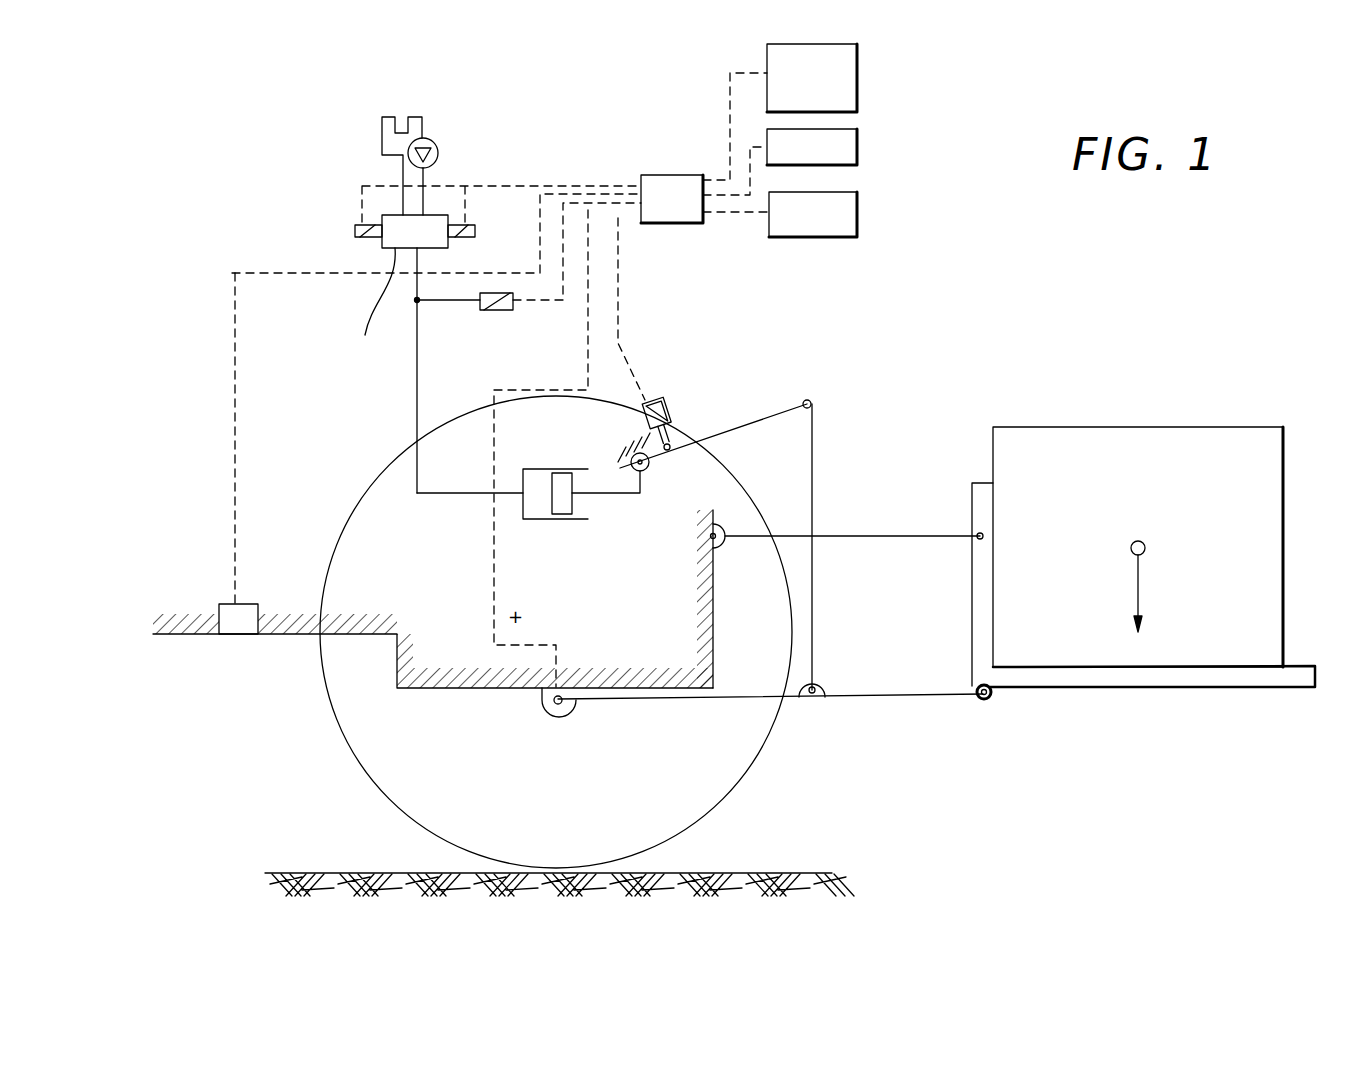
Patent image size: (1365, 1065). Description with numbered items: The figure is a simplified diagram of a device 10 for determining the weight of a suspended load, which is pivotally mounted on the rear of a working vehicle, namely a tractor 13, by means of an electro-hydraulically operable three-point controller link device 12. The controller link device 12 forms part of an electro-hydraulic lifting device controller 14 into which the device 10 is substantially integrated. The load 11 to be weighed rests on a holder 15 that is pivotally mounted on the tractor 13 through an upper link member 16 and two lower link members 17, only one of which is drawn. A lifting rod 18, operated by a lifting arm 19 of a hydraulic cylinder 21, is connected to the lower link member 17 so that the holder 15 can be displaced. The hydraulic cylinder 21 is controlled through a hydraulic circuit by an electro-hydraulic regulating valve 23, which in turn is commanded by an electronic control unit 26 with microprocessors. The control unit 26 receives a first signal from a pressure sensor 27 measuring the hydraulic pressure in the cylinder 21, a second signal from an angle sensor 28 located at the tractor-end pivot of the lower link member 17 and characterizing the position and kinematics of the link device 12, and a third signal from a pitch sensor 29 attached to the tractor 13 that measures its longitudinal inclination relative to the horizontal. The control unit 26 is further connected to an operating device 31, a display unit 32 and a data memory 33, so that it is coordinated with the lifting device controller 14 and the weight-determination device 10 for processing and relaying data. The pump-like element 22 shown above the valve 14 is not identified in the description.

The device for determination of the weight of a suspended load 10 is at (877, 327).
The load 11 is at (1265, 628).
The controller link device 12 is at (826, 463).
The tractor 13 is at (340, 676).
The electro-hydraulic lifting device controller 14 is at (346, 226).
The holder 15 is at (1066, 676).
The upper link member 16 is at (912, 534).
The lower link member 17 is at (880, 698).
The lifting rod 18 is at (812, 595).
The lifting arm 19 is at (742, 430).
The hydraulic cylinder 21 is at (548, 520).
The pump 22 is at (443, 167).
The electro-hydraulic regulating valve 23 is at (375, 310).
The electronic control unit 26 is at (693, 196).
The pressure sensor 27 is at (500, 312).
The angle sensor 28 is at (565, 703).
The pitch sensor 29 is at (258, 604).
The operating device 31 is at (845, 214).
The display unit 32 is at (845, 149).
The data memory 33 is at (843, 101).